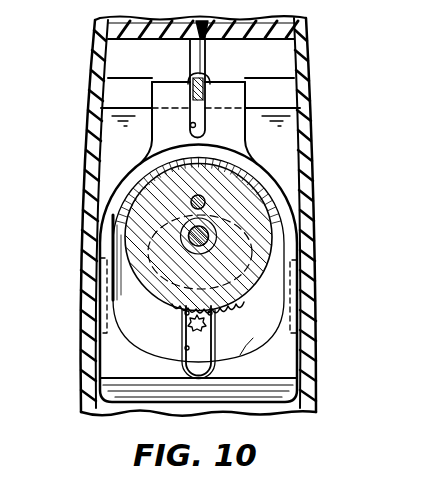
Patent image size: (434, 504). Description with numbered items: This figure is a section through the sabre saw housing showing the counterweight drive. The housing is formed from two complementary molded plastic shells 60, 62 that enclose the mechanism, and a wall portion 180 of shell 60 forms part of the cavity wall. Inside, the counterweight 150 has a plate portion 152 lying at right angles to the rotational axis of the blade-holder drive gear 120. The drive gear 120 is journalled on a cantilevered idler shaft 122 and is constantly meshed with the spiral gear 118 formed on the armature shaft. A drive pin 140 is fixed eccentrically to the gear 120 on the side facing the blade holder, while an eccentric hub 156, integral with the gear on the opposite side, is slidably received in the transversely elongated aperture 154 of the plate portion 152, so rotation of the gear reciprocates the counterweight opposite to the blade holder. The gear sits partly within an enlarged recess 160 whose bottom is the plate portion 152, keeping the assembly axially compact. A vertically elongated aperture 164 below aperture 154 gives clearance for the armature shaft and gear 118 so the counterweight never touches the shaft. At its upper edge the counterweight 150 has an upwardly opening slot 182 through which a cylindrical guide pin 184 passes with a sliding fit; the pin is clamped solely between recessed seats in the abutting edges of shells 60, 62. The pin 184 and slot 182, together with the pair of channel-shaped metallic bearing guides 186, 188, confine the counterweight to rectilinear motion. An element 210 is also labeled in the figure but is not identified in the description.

The shell 60 is at (89, 94).
The shell 62 is at (305, 107).
The spiral gear 118 is at (211, 325).
The blade-holder drive gear 120 is at (232, 303).
The idler shaft 122 is at (208, 237).
The drive pin 140 is at (205, 202).
The counterweight 150 is at (282, 157).
The plate portion 152 is at (162, 337).
The transversely elongated aperture 154 is at (125, 238).
The eccentric hub 156 is at (158, 288).
The recess 160 is at (253, 338).
The vertically elongated aperture 164 is at (184, 358).
The wall portion 180 is at (167, 62).
The slot 182 is at (191, 125).
The guide pin 184 is at (207, 80).
The bearing guide 186 is at (97, 287).
The bearing guide 188 is at (312, 320).
The vent opening 210 is at (210, 19).